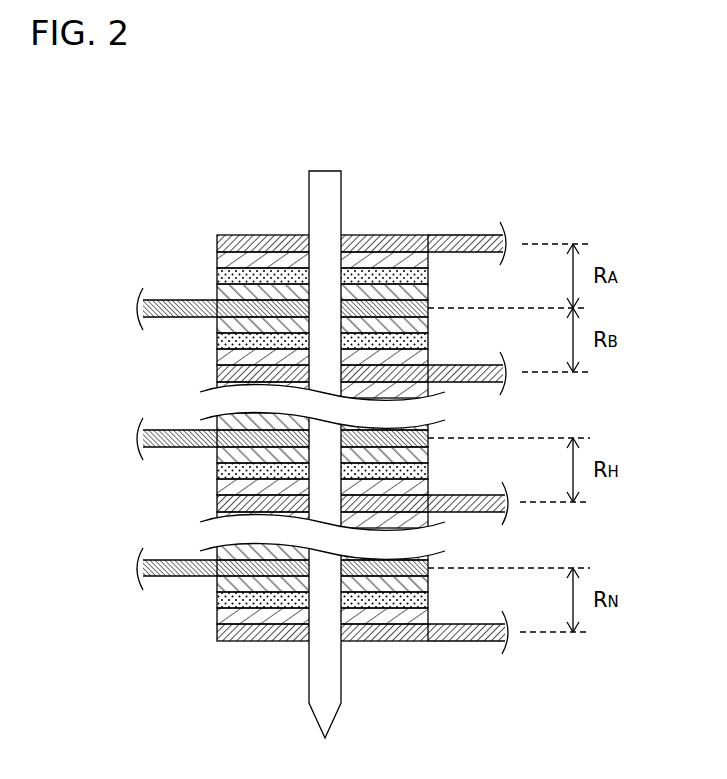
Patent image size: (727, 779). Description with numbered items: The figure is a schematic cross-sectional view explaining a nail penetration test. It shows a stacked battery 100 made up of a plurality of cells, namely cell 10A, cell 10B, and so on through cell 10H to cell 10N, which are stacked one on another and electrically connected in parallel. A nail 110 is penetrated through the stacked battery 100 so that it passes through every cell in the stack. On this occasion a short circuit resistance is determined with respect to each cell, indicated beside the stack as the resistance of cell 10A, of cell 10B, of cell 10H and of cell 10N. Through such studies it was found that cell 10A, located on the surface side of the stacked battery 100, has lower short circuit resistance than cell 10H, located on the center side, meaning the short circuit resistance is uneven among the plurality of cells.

The stacked battery 100 is at (628, 115).
The nail 110 is at (325, 178).
The cell 10A is at (122, 237).
The cell 10B is at (122, 310).
The cell 10H is at (122, 437).
The cell 10N is at (122, 568).